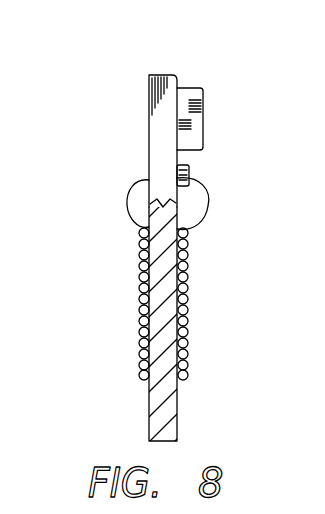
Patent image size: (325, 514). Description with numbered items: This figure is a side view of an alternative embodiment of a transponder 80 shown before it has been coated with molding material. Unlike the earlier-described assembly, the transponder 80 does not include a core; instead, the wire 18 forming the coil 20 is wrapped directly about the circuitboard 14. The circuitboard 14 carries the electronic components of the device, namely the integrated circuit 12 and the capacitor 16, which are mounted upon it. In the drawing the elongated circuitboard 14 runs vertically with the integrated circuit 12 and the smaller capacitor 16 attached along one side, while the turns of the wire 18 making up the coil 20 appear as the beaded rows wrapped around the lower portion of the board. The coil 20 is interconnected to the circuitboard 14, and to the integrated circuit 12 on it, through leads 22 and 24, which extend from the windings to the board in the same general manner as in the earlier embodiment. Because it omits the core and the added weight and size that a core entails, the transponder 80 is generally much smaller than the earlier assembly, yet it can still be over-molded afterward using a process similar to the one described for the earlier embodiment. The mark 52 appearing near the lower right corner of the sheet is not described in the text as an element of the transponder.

The transponder 80 is at (124, 96).
The circuitboard 14 is at (168, 74).
The integrated circuit 12 is at (193, 130).
The capacitor 16 is at (190, 174).
The lead 22 is at (204, 210).
The lead 24 is at (128, 195).
The coil 20 is at (190, 288).
The wire 18 is at (187, 330).
The sheet mark 52 is at (297, 512).